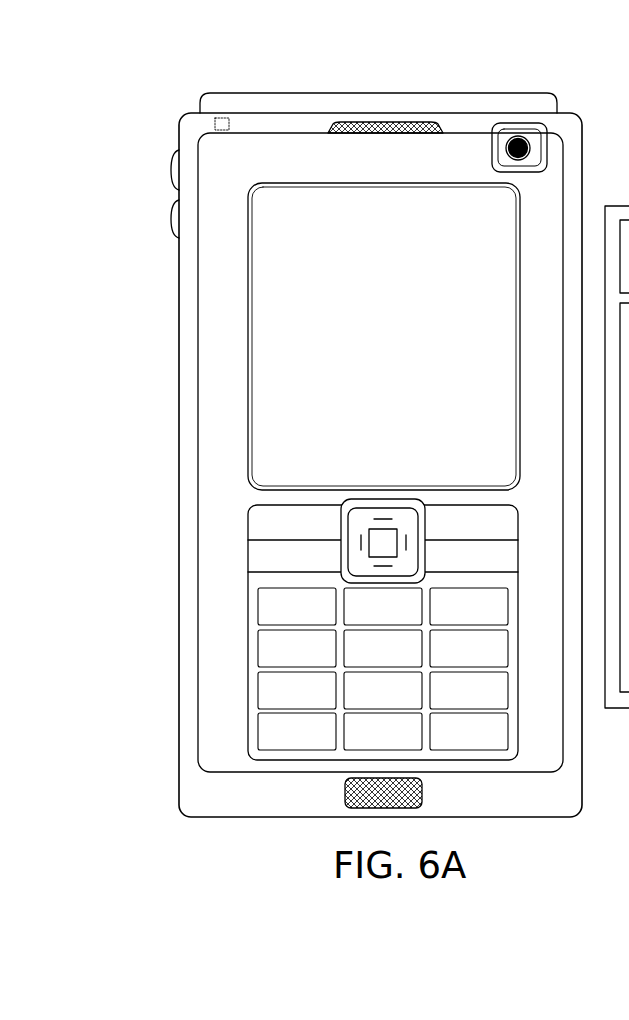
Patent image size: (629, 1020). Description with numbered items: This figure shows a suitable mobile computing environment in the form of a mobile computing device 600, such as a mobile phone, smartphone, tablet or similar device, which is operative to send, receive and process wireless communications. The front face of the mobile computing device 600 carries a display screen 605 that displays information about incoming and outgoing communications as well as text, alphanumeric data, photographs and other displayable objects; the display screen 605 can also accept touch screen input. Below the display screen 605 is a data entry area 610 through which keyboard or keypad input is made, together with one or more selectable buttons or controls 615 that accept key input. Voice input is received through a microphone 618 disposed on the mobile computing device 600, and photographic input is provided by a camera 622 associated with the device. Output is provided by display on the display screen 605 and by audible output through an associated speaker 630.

The mobile computing device 600 is at (181, 119).
The display screen 605 is at (282, 319).
The data entry area 610 is at (248, 548).
The selectable buttons or controls 615 is at (272, 649).
The microphone 618 is at (343, 796).
The camera 622 is at (521, 146).
The speaker 630 is at (390, 128).